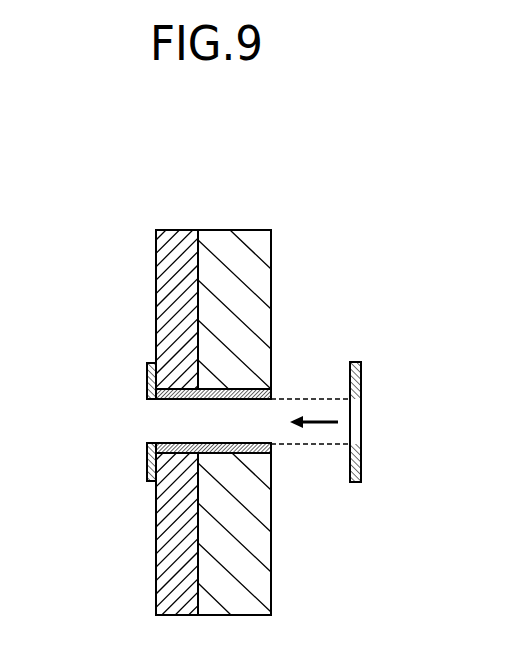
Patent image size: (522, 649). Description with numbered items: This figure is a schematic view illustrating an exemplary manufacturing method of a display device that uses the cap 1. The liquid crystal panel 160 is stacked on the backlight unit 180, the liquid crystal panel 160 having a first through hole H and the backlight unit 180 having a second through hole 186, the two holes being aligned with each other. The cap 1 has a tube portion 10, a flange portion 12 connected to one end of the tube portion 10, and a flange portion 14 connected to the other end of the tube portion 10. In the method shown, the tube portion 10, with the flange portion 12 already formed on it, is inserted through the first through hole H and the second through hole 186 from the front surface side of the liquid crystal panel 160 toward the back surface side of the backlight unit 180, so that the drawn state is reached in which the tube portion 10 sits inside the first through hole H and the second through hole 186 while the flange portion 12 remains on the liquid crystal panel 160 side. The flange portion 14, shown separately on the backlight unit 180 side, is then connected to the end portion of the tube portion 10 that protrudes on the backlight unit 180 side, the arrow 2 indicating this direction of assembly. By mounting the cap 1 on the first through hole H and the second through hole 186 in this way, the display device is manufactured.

The cap 1 is at (97, 343).
The liquid crystal panel 160 is at (172, 216).
The backlight unit 180 is at (232, 216).
The second through hole 186 is at (260, 410).
The tube portion 10 is at (178, 447).
The flange portion 12 is at (150, 472).
The first through hole H is at (163, 415).
The beam 2 is at (260, 435).
The flange portion 14 is at (362, 453).